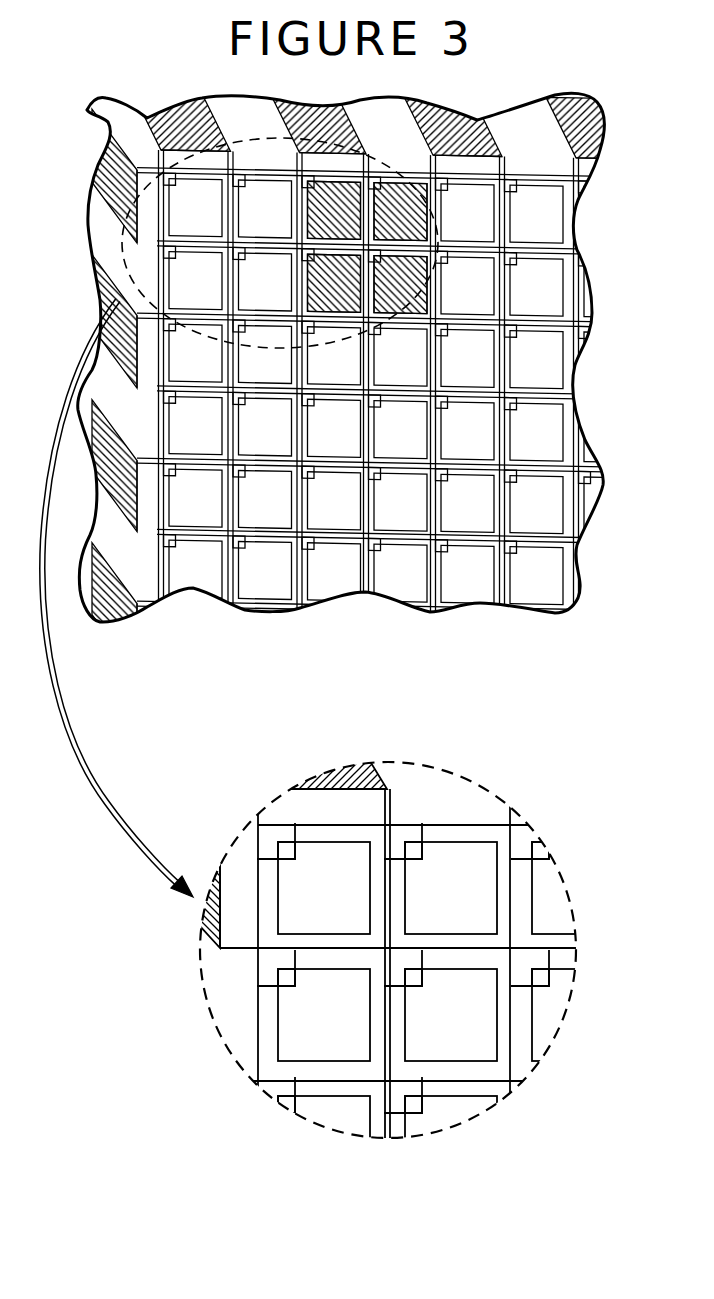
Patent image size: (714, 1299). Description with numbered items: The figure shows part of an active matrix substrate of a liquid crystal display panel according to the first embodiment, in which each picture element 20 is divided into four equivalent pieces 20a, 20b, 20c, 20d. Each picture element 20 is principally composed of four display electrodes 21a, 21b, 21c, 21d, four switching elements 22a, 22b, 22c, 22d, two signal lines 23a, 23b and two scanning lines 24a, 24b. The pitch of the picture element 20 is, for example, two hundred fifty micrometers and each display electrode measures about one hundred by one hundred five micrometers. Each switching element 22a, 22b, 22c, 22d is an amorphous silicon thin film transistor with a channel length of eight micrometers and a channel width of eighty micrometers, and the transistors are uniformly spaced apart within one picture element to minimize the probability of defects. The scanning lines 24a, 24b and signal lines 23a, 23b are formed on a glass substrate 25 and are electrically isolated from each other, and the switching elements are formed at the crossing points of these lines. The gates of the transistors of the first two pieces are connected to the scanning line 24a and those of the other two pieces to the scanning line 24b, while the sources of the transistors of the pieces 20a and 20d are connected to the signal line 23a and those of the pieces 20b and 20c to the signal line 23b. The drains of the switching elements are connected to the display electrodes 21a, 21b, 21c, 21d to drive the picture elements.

The picture element 20 is at (398, 173).
The picture element piece 20a is at (334, 210).
The picture element piece 20b is at (400, 212).
The picture element piece 20c is at (400, 285).
The picture element piece 20d is at (334, 283).
The display electrode 21a is at (324, 888).
The display electrode 21b is at (451, 888).
The display electrode 21c is at (451, 1015).
The display electrode 21d is at (324, 1015).
The switching element 22a is at (295, 848).
The switching element 22b is at (422, 850).
The switching element 22c is at (422, 978).
The switching element 22d is at (295, 978).
The signal line 23a is at (158, 148).
The signal line 23b is at (237, 167).
The scanning line 24a is at (140, 119).
The scanning line 24b is at (145, 248).
The glass substrate 25 is at (553, 164).